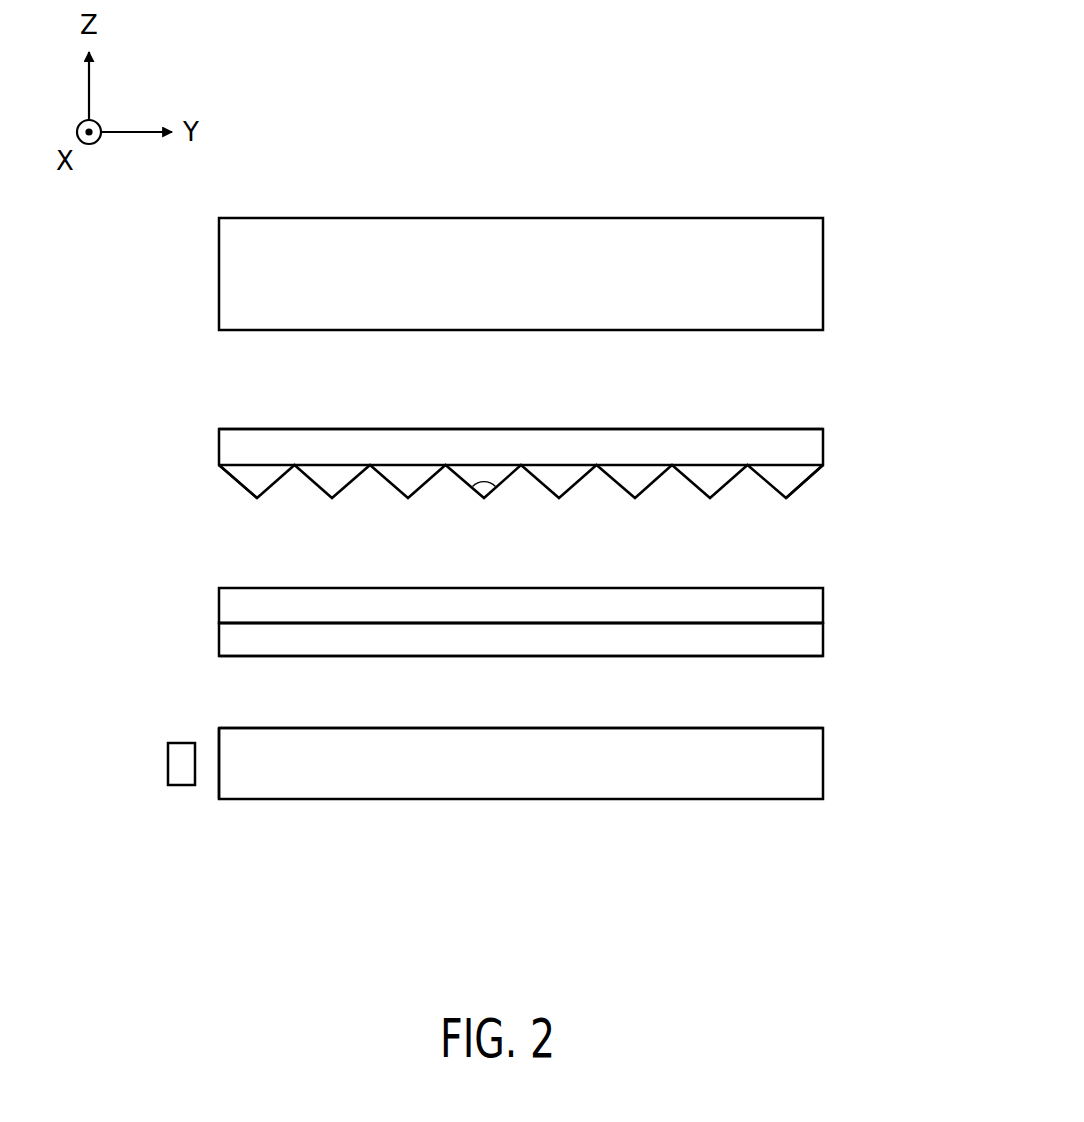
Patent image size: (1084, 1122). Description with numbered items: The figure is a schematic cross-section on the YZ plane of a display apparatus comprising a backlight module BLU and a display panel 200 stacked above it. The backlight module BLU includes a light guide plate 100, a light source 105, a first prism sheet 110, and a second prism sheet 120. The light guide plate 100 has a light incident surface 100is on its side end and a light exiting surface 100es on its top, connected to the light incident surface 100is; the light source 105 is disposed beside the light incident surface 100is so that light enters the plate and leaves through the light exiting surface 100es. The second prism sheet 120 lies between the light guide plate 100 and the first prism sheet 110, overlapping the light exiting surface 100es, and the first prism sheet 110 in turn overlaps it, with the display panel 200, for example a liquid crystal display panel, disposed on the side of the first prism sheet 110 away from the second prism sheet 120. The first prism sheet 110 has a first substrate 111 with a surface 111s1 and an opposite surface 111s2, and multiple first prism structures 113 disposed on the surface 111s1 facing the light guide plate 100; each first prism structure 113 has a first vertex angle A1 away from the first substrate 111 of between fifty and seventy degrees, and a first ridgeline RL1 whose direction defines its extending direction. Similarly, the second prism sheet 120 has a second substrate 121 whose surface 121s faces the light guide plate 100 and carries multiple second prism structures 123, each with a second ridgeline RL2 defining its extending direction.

The display panel 200 is at (800, 280).
The first prism sheet 110 is at (587, 461).
The first substrate 111 is at (800, 447).
The first prism structures 113 is at (793, 477).
The surface 111s1 is at (254, 471).
The surface 111s2 is at (254, 423).
The first vertex angle A1 is at (484, 482).
The first ridgeline RL1 is at (791, 504).
The second prism sheet 120 is at (587, 621).
The second substrate 121 is at (800, 605).
The second prism structures 123 is at (800, 645).
The surface 121s is at (258, 629).
The second ridgeline RL2 is at (294, 661).
The light guide plate 100 is at (800, 768).
The light exiting surface 100es is at (789, 724).
The light incident surface 100is is at (214, 763).
The light source 105 is at (177, 768).
The backlight module BLU is at (113, 428).